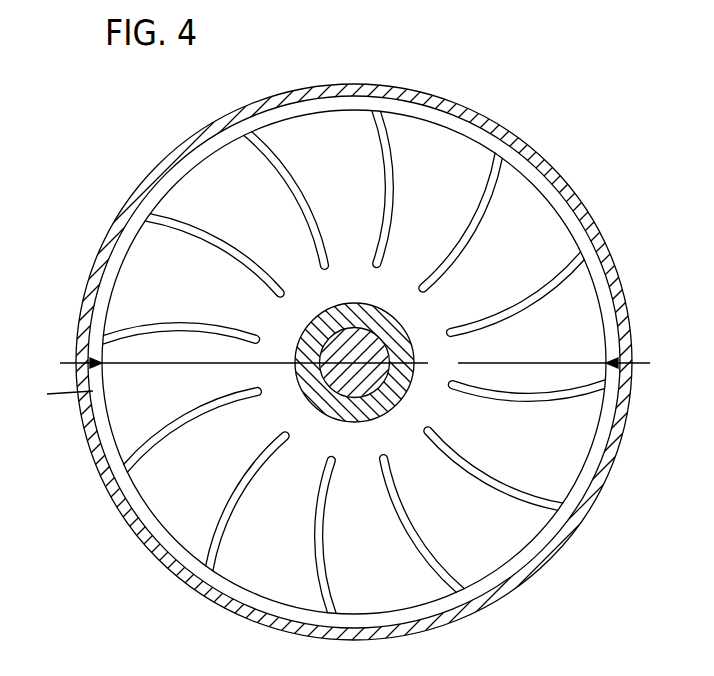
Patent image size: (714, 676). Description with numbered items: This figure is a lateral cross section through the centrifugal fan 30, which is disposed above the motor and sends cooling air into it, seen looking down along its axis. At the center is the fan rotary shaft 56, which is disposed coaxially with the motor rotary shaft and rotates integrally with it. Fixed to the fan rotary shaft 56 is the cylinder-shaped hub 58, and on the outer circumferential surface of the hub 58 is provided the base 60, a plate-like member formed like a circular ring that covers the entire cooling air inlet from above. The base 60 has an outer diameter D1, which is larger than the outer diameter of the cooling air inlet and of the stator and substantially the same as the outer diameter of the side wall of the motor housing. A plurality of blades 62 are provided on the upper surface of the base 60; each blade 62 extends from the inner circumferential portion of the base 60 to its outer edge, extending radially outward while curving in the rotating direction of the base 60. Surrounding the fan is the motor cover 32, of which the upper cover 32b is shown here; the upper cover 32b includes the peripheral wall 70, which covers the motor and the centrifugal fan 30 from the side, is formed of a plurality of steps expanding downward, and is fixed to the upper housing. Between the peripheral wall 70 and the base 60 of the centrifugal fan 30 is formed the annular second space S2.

The centrifugal fan 30 is at (357, 338).
The motor cover 32 is at (357, 338).
The upper cover 32b is at (157, 167).
The peripheral wall 70 is at (560, 188).
The base 60 is at (592, 442).
The blades 62 is at (523, 495).
The hub 58 is at (397, 337).
The fan rotary shaft 56 is at (358, 338).
The outer diameter of the base D1 is at (355, 364).
The annular second space S2 is at (59, 400).